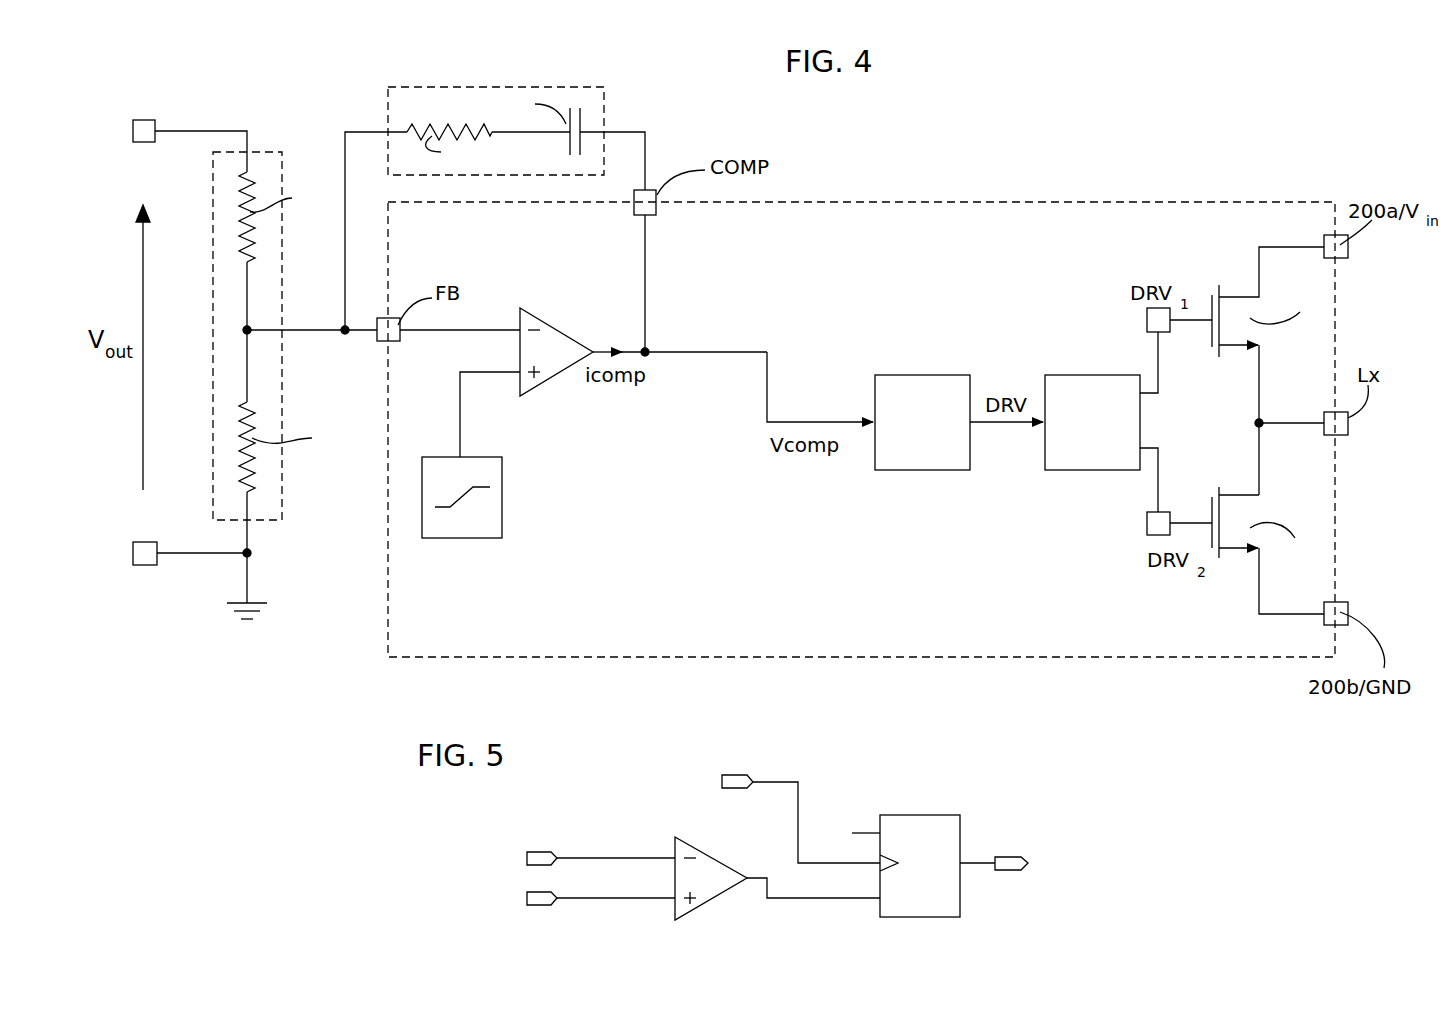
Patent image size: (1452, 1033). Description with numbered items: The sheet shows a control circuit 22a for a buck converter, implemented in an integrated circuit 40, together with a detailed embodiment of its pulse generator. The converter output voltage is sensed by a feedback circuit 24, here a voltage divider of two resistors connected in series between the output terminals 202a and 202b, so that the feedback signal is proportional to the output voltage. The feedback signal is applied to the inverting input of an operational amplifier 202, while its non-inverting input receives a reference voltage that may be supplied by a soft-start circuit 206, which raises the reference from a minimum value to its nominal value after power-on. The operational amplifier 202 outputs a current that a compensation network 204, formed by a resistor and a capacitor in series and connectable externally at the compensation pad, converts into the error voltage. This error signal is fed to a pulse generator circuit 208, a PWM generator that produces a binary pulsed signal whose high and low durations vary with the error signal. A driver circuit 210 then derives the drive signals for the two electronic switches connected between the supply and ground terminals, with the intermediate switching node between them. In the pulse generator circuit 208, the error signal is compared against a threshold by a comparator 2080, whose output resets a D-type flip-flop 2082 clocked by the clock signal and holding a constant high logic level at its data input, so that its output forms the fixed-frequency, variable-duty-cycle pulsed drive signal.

In FIG. 4, the integrated circuit 40 is at (1145, 188).
In FIG. 4, the output terminal 202a is at (143, 127).
In FIG. 4, the output terminal 202b is at (143, 566).
In FIG. 4, the feedback circuit 24 is at (270, 512).
In FIG. 4, the compensation network 204 is at (436, 88).
In FIG. 4, the operational amplifier 202 is at (560, 338).
In FIG. 4, the soft-start circuit 206 is at (497, 508).
In FIG. 4, the control circuit 22a is at (958, 328).
In FIG. 4, the pulse generator circuit 208 is at (912, 456).
In FIG. 5, the pulse generator circuit 208 is at (772, 838).
In FIG. 4, the driver circuit 210 is at (1075, 458).
In FIG. 5, the comparator 2080 is at (675, 912).
In FIG. 5, the flip-flop 2082 is at (945, 908).